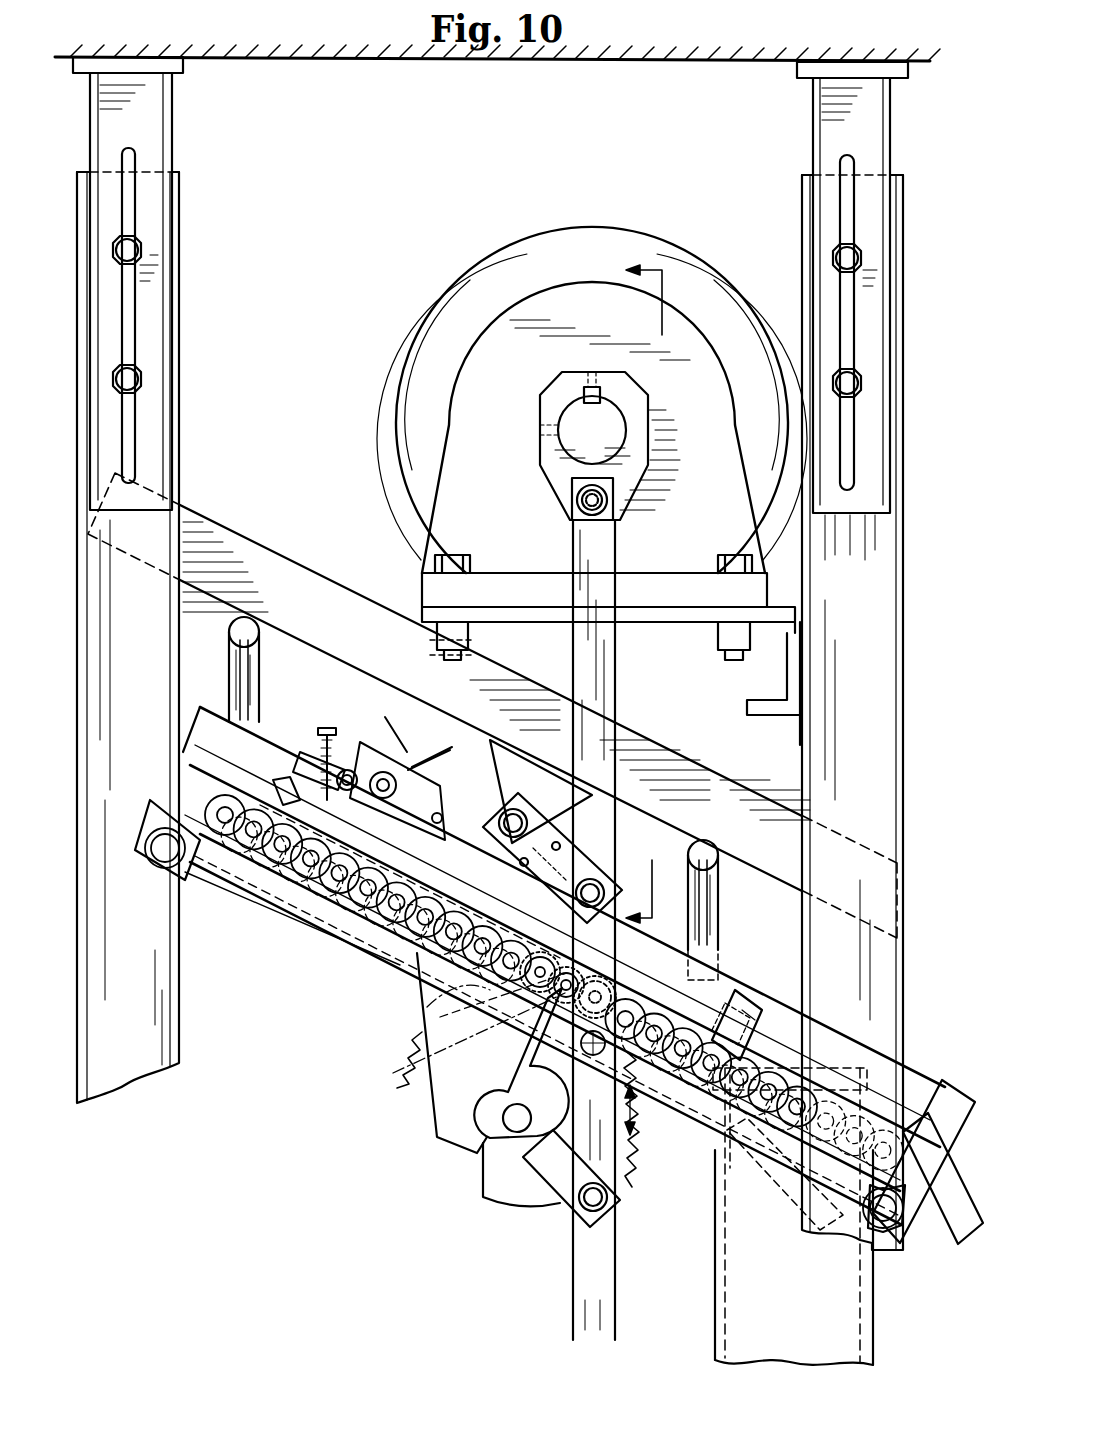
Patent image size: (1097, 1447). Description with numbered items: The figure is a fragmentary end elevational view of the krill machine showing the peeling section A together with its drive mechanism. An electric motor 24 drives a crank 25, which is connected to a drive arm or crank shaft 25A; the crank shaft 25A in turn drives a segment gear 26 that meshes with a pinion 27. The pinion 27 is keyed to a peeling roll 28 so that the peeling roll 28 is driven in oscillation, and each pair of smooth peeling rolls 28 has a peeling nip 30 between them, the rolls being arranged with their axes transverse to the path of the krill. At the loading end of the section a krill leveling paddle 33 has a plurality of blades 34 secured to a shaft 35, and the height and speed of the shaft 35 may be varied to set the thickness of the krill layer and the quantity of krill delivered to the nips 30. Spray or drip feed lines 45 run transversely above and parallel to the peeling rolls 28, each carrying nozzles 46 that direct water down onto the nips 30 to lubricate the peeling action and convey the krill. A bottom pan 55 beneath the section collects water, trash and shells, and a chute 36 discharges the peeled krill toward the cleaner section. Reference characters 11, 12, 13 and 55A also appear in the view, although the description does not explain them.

The electric motor 24 is at (455, 302).
The section line 11 is at (653, 594).
The crank 25 is at (652, 438).
The crank shaft 25A is at (608, 672).
The end plate 13 is at (228, 683).
The spray or drip feed line 45 is at (252, 634).
The nozzle 46 is at (257, 704).
The krill leveling paddle 33 is at (400, 720).
The shaft 35 is at (387, 782).
The blade 34 is at (435, 762).
The peeling nip 30 is at (345, 838).
The peeling roll 28 is at (312, 880).
The peeling section A is at (348, 957).
The pinion 27 is at (556, 996).
The pivot arm 12 is at (562, 930).
The segment gear 26 is at (638, 1170).
The bottom pan 55 is at (725, 1182).
The column 55A is at (806, 1287).
The chute 36 is at (945, 1228).